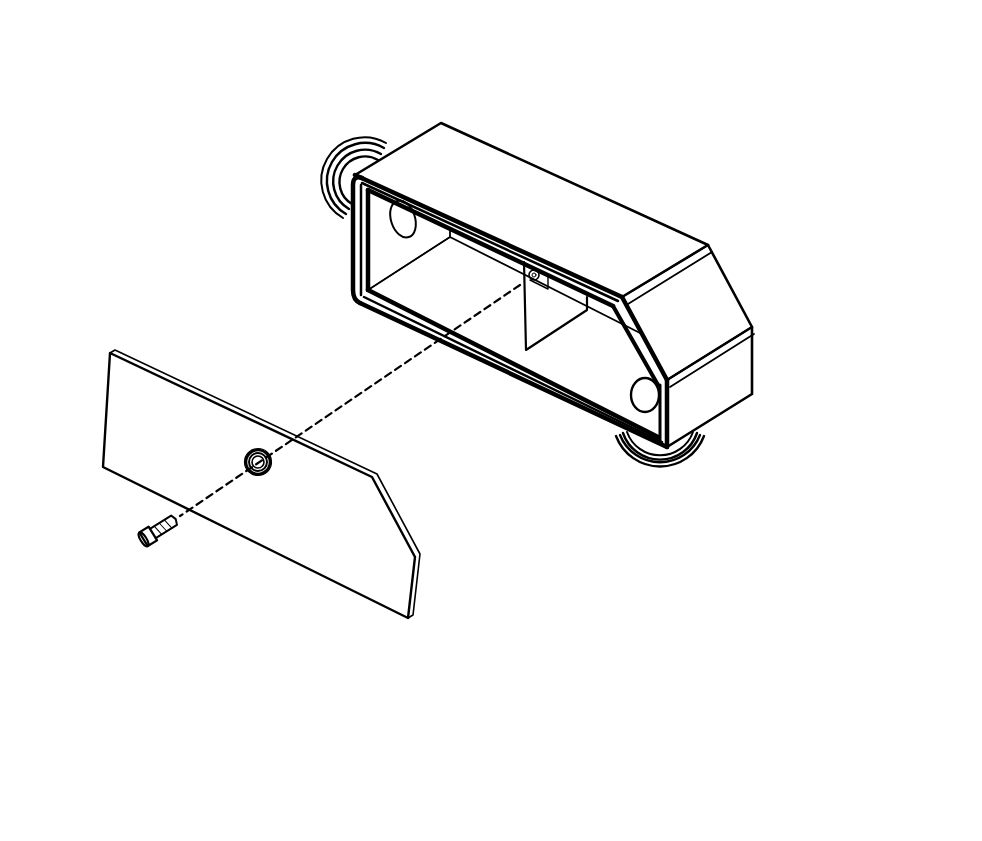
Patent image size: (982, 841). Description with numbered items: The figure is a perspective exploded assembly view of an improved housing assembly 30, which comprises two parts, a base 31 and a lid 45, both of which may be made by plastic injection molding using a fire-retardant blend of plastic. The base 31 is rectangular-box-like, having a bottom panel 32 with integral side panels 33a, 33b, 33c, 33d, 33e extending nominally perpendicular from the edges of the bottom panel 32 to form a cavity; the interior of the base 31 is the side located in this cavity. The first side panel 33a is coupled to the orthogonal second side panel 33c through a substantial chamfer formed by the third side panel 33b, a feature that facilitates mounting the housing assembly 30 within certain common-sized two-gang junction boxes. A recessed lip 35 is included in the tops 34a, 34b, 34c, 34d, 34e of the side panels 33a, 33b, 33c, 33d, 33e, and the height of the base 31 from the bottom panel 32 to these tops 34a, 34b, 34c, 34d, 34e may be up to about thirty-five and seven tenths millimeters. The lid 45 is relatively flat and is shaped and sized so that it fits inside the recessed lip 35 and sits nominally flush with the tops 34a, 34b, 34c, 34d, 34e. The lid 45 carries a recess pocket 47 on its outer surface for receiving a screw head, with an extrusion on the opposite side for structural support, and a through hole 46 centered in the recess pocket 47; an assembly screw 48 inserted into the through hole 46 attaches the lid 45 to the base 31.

The improved housing assembly 30 is at (148, 105).
The base 31 is at (388, 130).
The bottom panel 32 is at (470, 246).
The first side panel 33a is at (625, 235).
The third side panel 33b is at (693, 287).
The second side panel 33c is at (720, 383).
The side panel 33d is at (492, 336).
The side panel 33e is at (374, 248).
The top of side panel 34a is at (463, 227).
The top of side panel 34b is at (650, 347).
The top of side panel 34c is at (693, 430).
The top of side panel 34d is at (547, 398).
The top of side panel 34e is at (347, 247).
The recessed lip 35 is at (607, 430).
The lid 45 is at (300, 517).
The through hole 46 is at (258, 473).
The recess pocket 47 is at (245, 461).
The assembly screw 48 is at (147, 547).